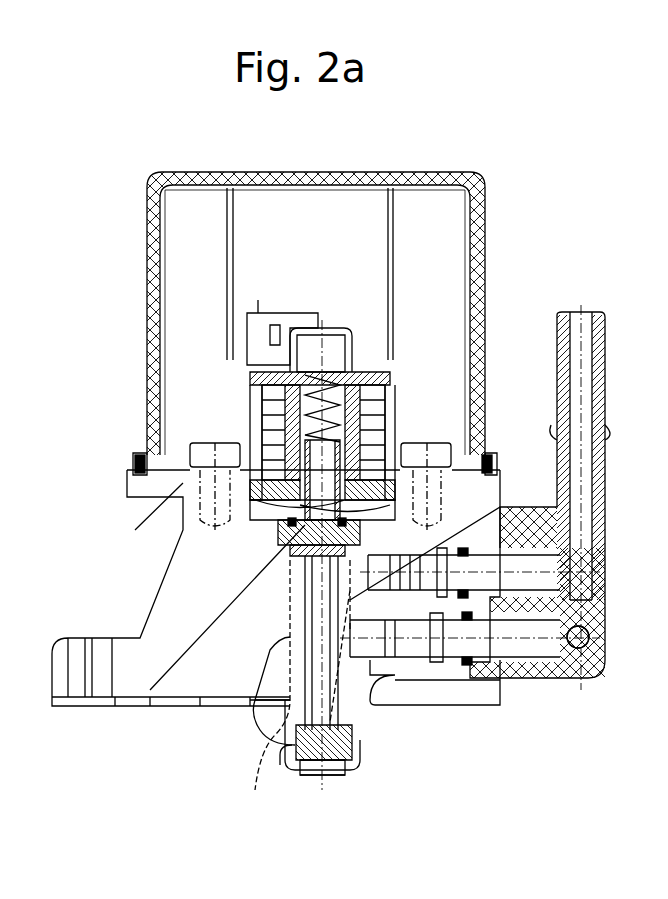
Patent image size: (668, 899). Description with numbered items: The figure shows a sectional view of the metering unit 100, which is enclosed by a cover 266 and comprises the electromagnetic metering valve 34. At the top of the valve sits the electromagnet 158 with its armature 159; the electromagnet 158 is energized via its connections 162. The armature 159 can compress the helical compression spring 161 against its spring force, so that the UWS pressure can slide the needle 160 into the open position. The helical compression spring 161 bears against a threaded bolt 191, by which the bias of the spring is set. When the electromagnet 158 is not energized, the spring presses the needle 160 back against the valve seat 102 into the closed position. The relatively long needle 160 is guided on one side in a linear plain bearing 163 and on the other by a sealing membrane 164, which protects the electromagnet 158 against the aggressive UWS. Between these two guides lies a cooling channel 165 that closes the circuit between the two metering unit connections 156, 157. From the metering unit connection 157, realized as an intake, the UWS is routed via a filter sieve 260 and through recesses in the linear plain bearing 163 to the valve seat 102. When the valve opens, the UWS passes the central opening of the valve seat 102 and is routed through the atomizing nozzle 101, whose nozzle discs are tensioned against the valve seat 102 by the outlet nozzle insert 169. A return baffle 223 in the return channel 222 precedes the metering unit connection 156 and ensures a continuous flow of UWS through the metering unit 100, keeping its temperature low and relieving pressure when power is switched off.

The cover 266 is at (150, 265).
The metering unit 100 is at (150, 532).
The connections 162 is at (275, 330).
The electromagnet 158 is at (375, 358).
The threaded bolt 191 is at (372, 330).
The helical compression spring 161 is at (330, 385).
The armature 159 is at (300, 540).
The sealing membrane 164 is at (290, 552).
The needle 160 is at (295, 735).
The valve seat 102 is at (345, 755).
The outlet nozzle insert 169 is at (318, 768).
The linear plain bearing 163 is at (295, 762).
The atomizing nozzle 101 is at (342, 790).
The electromagnetic metering valve 34 is at (290, 728).
The cooling channel 165 is at (280, 683).
The return channel 222 is at (445, 548).
The return baffle 223 is at (463, 550).
The filter sieve 260 is at (430, 645).
The metering unit connection 156 is at (520, 520).
The metering unit connection 157 is at (580, 660).